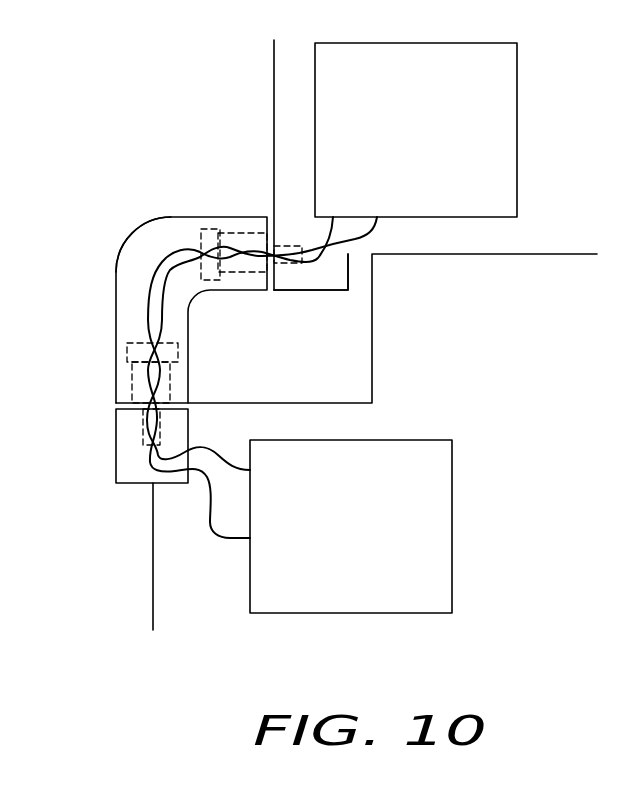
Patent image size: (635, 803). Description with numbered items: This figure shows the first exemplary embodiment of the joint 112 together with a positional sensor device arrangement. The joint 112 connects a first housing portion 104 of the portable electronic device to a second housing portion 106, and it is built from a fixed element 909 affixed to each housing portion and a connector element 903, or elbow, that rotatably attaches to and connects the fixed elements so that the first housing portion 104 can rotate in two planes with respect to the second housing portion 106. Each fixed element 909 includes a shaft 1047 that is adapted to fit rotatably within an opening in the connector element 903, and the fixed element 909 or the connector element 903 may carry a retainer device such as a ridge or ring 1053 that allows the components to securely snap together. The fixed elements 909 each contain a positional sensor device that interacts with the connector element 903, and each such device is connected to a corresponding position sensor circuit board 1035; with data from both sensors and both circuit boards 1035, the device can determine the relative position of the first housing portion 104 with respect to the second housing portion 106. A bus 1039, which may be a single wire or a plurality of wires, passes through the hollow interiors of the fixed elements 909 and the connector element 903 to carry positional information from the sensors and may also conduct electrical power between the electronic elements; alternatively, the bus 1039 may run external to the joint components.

The first housing portion 104 is at (274, 71).
The second housing portion 106 is at (153, 608).
The joint 112 is at (110, 226).
The connector element 903 is at (151, 223).
The first fixed element 909 is at (116, 446).
The position sensor circuit board 1035 is at (517, 128).
The bus 1039 is at (148, 305).
The shaft 1047 is at (243, 273).
The ridge or ring 1053 is at (216, 229).